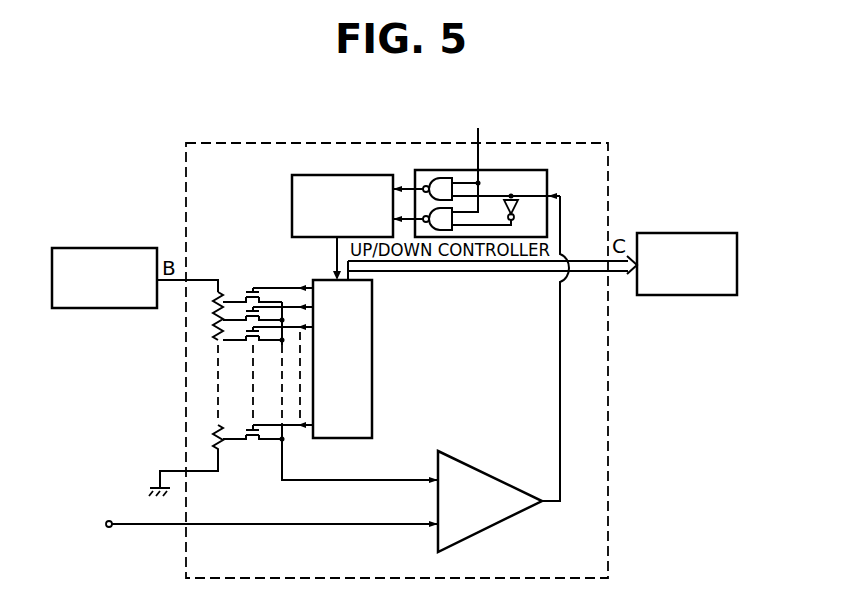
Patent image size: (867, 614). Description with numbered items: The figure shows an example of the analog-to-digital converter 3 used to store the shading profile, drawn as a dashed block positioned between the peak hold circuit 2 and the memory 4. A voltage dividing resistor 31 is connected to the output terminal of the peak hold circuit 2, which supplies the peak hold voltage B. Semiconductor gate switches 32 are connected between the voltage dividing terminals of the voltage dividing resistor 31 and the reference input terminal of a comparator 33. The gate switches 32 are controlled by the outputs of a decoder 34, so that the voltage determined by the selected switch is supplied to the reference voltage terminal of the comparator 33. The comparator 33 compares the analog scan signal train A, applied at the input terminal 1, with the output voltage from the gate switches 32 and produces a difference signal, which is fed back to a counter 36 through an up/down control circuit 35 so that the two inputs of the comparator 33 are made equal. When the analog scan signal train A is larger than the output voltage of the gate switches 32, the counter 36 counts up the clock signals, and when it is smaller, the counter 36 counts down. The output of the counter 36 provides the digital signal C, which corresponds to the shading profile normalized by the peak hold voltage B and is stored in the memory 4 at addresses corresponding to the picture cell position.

The input terminal A 1 is at (108, 520).
The peak hold circuit 2 is at (120, 248).
The analog-to-digital converter 3 is at (612, 184).
The memory 4 is at (674, 233).
The voltage dividing resistor 31 is at (222, 342).
The semiconductor gate switches 32 is at (252, 288).
The comparator 33 is at (508, 483).
The decoder 34 is at (374, 358).
The up/down control circuit 35 is at (546, 176).
The counter 36 is at (292, 200).